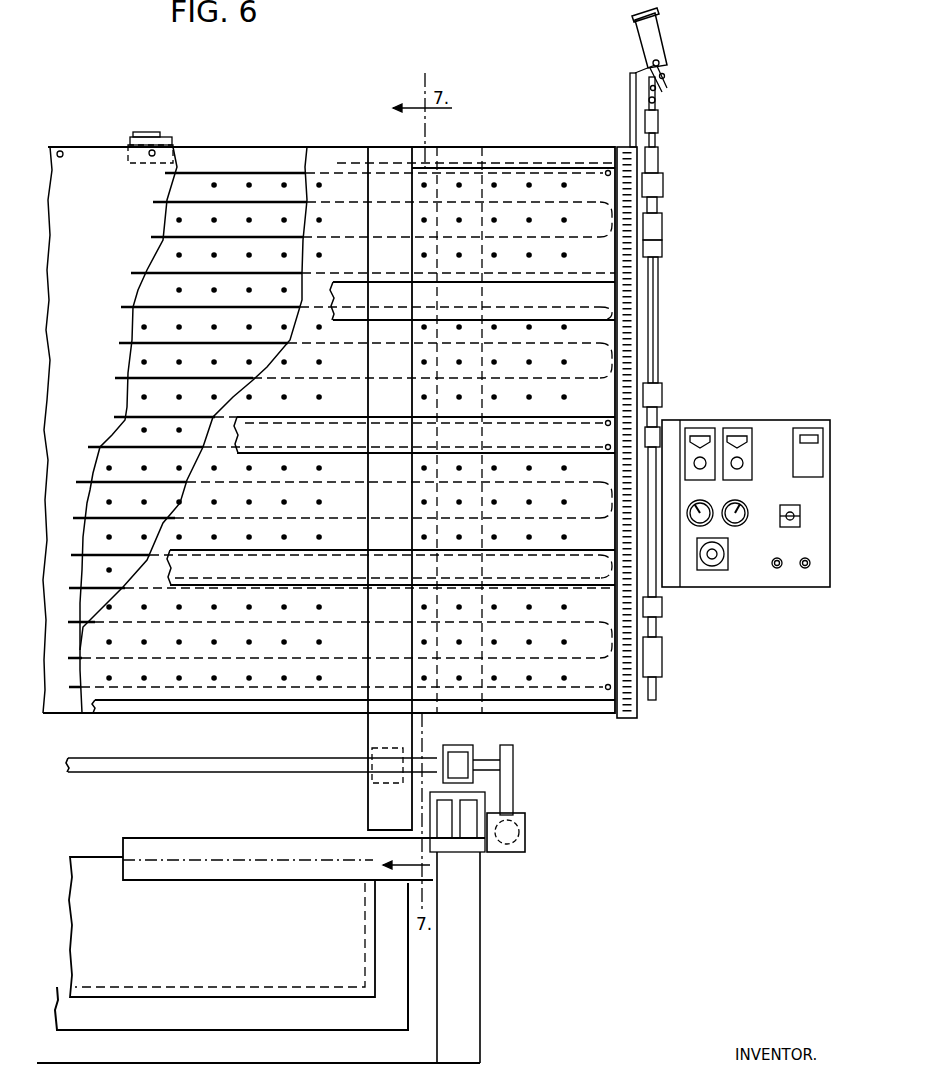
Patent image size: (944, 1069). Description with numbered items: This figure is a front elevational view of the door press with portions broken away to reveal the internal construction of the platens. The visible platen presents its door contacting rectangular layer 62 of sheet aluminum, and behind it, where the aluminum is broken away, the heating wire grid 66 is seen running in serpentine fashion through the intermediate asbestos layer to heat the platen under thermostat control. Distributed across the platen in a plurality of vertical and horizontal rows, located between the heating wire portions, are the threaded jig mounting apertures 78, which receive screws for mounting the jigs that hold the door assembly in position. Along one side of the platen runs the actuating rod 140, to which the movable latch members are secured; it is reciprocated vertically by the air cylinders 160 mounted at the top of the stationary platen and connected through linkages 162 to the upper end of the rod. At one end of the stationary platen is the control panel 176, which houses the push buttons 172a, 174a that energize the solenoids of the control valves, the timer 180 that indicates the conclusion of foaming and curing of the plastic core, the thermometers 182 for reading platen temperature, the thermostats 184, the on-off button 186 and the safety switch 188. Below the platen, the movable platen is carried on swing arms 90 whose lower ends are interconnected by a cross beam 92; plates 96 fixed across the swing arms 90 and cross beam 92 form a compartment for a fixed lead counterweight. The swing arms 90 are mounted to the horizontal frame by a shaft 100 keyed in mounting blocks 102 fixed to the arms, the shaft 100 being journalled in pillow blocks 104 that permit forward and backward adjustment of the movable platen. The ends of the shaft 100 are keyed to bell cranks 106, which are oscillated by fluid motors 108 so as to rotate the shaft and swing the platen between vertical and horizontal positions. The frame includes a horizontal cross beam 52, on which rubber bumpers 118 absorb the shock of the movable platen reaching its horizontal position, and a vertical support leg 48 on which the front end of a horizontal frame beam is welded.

The door contacting rectangular layer 62 is at (83, 168).
The heating wire grid 66 is at (143, 307).
The jig mounting apertures 78 is at (215, 538).
The bumpers 118 is at (390, 825).
The air cylinders 160 is at (651, 43).
The linkages 162 is at (659, 101).
The actuating rod 140 is at (659, 168).
The control panel 176 is at (765, 412).
The thermostats 184 is at (734, 438).
The safety switch 188 is at (808, 440).
The thermometers 182 is at (740, 510).
The on-off button 186 is at (790, 527).
The timer 180 is at (712, 568).
The push button 172a is at (778, 570).
The push button 174a is at (805, 570).
The shaft 100 is at (232, 740).
The mounting blocks 102 is at (372, 750).
The pillow blocks 104 is at (458, 757).
The bell cranks 106 is at (511, 784).
The fluid motors 108 is at (525, 827).
The horizontal cross beam 52 is at (252, 847).
The plates 96 is at (95, 865).
The swing arms 90 is at (388, 958).
The cross beam 92 is at (260, 1020).
The vertical support leg 48 is at (465, 983).